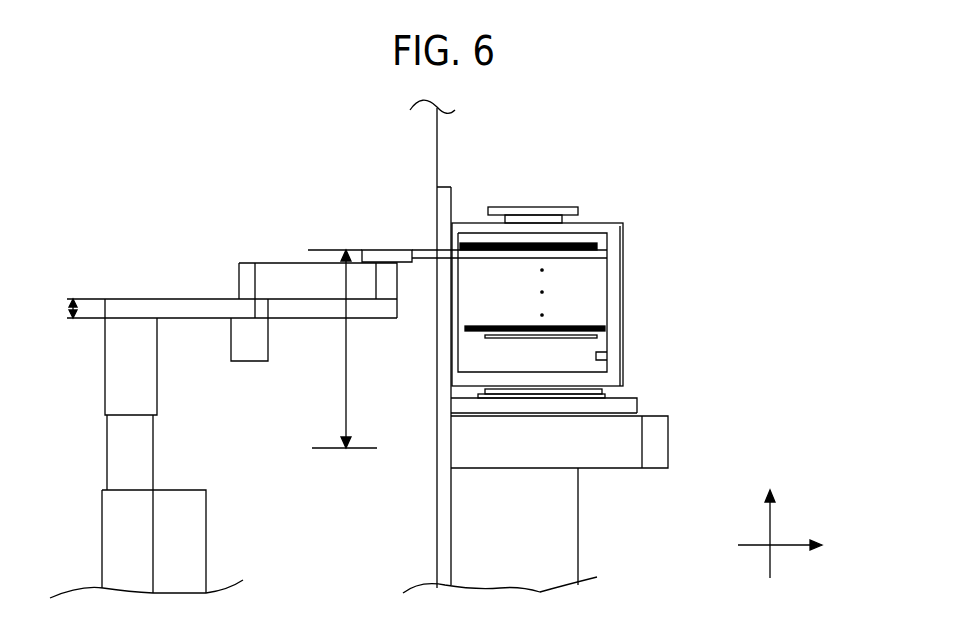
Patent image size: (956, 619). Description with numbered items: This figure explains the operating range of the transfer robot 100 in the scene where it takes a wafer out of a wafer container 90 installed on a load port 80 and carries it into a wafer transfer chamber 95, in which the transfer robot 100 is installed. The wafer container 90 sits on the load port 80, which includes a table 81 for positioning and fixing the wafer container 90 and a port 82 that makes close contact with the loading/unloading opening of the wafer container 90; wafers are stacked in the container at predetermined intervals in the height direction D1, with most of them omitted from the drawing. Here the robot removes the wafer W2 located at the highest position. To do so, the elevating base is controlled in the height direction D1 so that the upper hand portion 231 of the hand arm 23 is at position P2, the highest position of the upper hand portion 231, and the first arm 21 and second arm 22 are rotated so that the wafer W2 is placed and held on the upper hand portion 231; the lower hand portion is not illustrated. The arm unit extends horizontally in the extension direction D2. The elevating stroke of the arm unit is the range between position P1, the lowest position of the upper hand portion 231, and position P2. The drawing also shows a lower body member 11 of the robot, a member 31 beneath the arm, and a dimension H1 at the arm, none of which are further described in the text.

The wafer transfer chamber 95 is at (186, 122).
The transfer robot 100 is at (140, 250).
The base 11 is at (183, 517).
The first arm 21 is at (198, 298).
The second arm 22 is at (267, 275).
The hand arm 23 is at (370, 246).
The upper hand portion 231 is at (452, 222).
The sensor 31 is at (242, 347).
The load port 80 is at (703, 169).
The table 81 is at (613, 428).
The port 82 is at (451, 187).
The wafer container 90 is at (600, 222).
The wafer W2 is at (598, 246).
The arm height H1 is at (74, 308).
The position P1 is at (331, 451).
The position P2 is at (323, 249).
The height direction D1 is at (771, 519).
The extension direction D2 is at (795, 551).